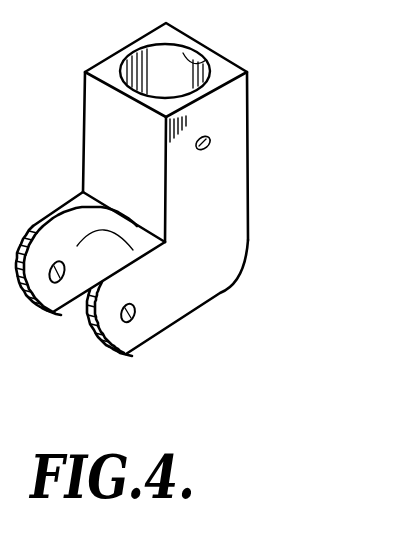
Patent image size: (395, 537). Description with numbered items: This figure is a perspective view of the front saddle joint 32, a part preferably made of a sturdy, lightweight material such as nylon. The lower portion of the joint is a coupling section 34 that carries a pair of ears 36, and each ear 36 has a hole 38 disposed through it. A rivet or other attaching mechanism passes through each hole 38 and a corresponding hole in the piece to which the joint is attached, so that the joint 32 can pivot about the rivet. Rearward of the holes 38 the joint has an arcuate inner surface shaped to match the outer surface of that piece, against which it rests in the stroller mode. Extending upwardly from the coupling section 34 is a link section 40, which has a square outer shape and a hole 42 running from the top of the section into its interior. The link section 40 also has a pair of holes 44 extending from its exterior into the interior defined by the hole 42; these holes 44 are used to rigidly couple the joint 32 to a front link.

The front saddle joint 32 is at (165, 206).
The coupling section 34 is at (180, 307).
The ears 36 is at (91, 281).
The hole 38 is at (57, 283).
The link section 40 is at (191, 132).
The hole 42 is at (195, 70).
The holes 44 is at (212, 146).